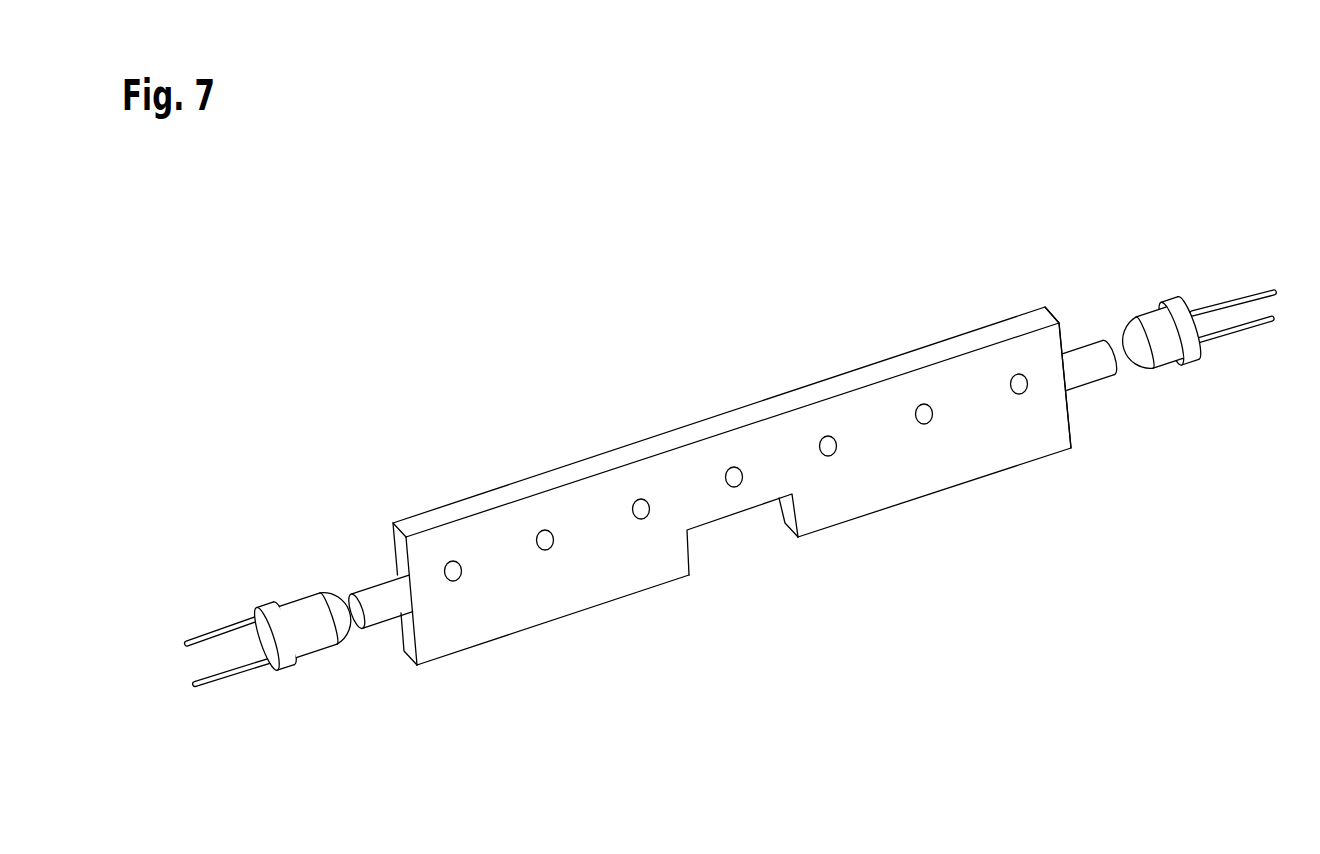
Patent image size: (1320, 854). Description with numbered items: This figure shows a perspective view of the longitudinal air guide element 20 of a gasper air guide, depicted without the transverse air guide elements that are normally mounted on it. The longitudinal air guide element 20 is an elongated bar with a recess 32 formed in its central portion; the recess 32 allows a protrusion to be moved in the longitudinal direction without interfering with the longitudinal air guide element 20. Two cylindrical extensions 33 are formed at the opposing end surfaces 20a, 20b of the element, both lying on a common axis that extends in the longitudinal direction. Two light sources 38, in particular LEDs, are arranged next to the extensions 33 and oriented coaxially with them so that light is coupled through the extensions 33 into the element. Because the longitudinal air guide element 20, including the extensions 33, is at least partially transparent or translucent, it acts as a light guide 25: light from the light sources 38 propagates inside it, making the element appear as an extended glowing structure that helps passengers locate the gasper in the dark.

The longitudinal air guide element 20 is at (529, 608).
The end surface 20a is at (400, 633).
The end surface 20b is at (1072, 330).
The light guide 25 is at (893, 312).
The recess 32 is at (758, 557).
The cylindrical extension 33 is at (372, 594).
The light source 38 is at (318, 638).